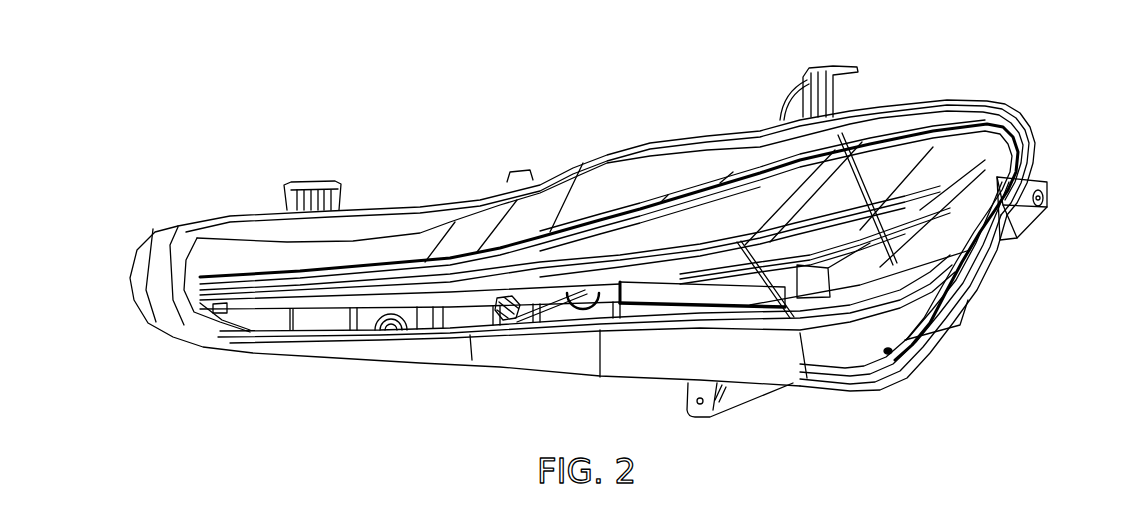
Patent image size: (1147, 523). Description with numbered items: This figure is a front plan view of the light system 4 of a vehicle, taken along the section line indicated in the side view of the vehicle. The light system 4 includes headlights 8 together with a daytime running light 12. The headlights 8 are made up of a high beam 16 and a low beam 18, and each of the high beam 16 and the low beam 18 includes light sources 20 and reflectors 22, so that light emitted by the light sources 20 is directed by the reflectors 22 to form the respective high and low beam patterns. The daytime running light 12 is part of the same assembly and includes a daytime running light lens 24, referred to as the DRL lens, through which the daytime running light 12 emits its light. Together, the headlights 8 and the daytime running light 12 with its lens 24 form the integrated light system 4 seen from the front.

The light system 4 is at (938, 80).
The headlights 8 is at (570, 327).
The daytime running light 12 is at (803, 270).
The high beam 16 is at (700, 295).
The low beam 18 is at (763, 300).
The light sources 20 is at (577, 243).
The reflectors 22 is at (805, 291).
The daytime running light lens 24 is at (897, 220).